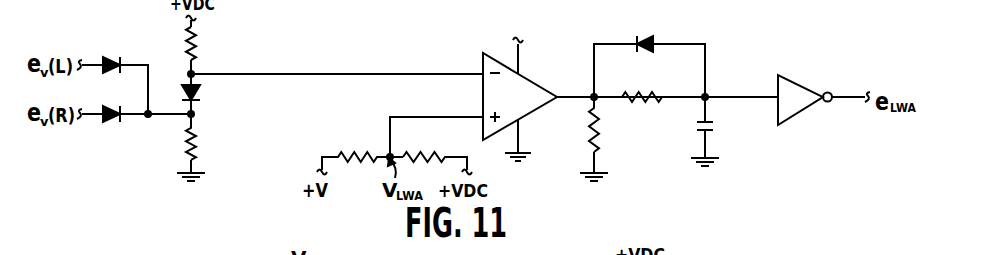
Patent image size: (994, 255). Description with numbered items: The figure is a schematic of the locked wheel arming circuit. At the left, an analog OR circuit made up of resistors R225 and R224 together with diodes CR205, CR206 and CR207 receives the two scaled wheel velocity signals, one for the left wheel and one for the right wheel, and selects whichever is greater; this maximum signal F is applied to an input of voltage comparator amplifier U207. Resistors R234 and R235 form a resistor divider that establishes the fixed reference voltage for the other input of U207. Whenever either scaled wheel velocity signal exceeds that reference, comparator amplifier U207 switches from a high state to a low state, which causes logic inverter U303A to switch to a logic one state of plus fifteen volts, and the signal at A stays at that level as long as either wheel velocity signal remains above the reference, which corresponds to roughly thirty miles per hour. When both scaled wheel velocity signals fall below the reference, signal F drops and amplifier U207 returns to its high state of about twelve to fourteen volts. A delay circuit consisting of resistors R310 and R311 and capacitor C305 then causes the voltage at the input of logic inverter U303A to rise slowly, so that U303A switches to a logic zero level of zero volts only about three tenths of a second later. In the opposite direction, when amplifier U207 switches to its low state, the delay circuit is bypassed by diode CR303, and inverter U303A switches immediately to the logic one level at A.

The diode CR206 is at (115, 75).
The diode CR205 is at (136, 127).
The resistor R224 is at (215, 50).
The diode CR207 is at (221, 94).
The resistor R225 is at (219, 143).
The signal F is at (327, 71).
The voltage comparator amplifier U207 is at (518, 89).
The resistor R234 is at (362, 149).
The resistor R235 is at (435, 149).
The diode CR303 is at (649, 53).
The resistor R311 is at (642, 86).
The resistor R310 is at (611, 139).
The capacitor C305 is at (727, 131).
The logic inverter U303A is at (815, 88).
The signal A is at (846, 94).